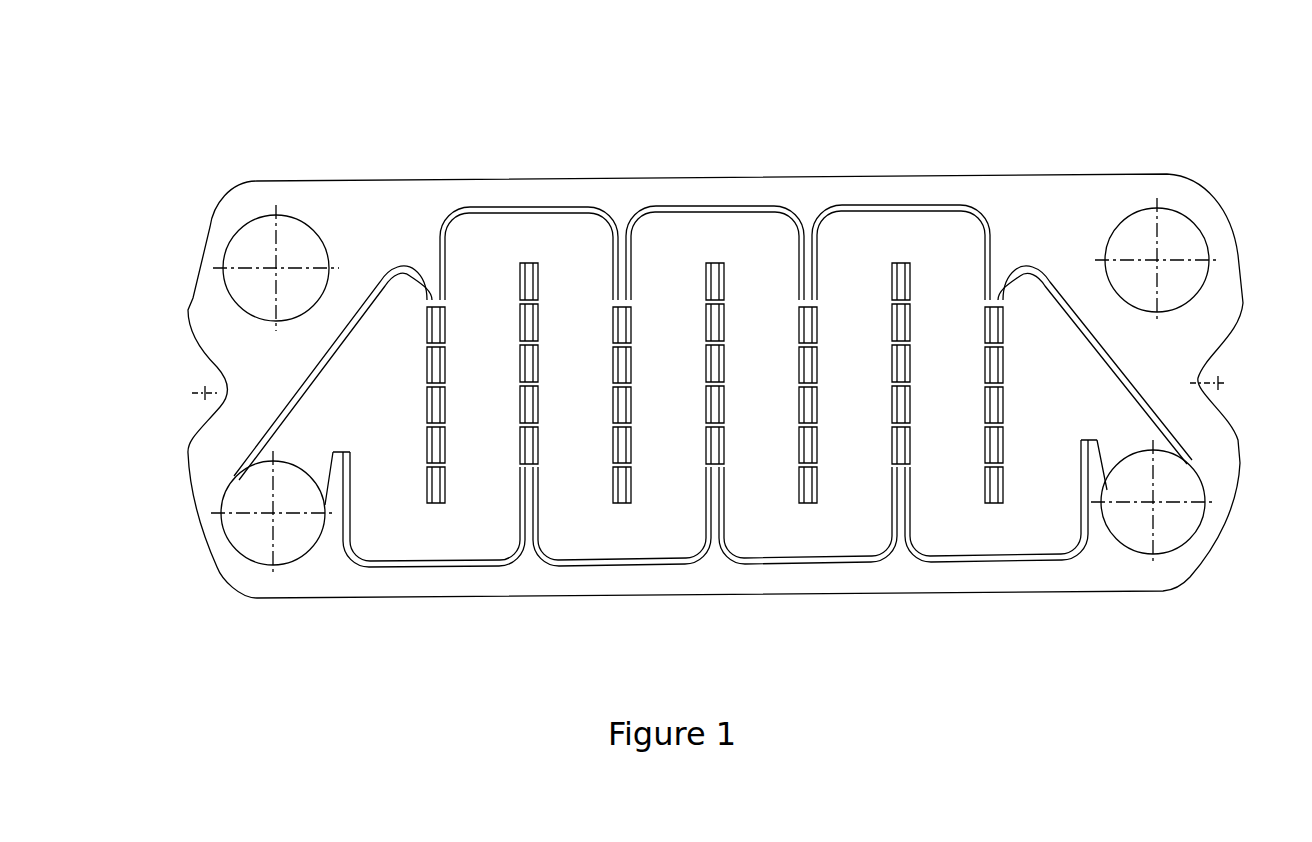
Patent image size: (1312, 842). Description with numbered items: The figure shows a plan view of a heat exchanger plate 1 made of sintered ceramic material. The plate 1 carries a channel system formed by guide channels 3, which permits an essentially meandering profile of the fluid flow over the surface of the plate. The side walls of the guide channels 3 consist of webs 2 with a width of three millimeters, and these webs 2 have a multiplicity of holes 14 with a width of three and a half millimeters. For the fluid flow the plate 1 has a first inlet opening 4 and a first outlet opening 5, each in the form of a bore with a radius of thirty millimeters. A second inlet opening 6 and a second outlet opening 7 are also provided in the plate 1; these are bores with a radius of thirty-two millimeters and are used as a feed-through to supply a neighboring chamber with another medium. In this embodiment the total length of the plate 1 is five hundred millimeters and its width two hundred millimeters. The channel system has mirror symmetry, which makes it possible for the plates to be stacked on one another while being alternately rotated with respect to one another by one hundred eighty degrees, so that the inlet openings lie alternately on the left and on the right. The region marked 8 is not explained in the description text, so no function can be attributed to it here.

The plate 1 is at (1245, 304).
The webs 2 is at (540, 321).
The guide channels 3 is at (858, 232).
The first inlet opening 4 is at (258, 532).
The first outlet opening 5 is at (1180, 523).
The second inlet opening 6 is at (1180, 240).
The second outlet opening 7 is at (299, 240).
The flow passage 8 is at (572, 238).
The holes 14 is at (445, 390).